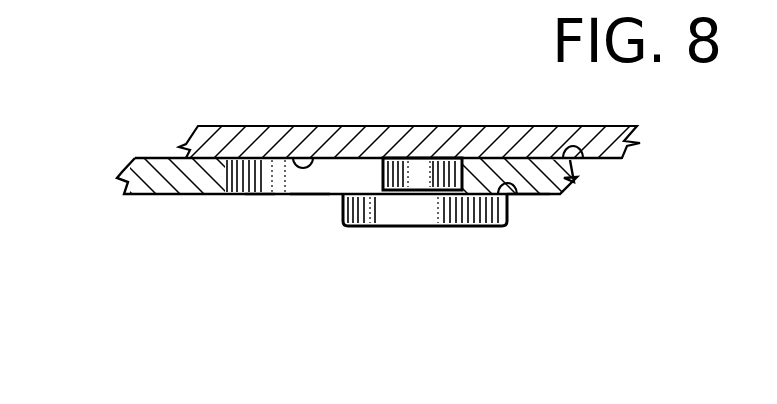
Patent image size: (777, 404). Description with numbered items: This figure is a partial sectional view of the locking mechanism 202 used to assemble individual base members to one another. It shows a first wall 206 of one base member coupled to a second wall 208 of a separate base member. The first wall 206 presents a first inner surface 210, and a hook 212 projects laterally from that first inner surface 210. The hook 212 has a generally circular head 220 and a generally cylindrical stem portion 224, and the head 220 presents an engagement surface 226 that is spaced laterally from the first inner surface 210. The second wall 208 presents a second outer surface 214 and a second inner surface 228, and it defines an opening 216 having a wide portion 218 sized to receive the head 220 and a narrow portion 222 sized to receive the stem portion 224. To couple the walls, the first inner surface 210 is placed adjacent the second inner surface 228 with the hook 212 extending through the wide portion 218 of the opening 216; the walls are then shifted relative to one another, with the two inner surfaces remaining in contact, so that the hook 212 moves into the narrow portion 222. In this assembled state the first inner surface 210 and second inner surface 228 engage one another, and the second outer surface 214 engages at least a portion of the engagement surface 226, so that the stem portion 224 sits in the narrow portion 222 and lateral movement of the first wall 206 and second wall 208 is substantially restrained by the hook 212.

The locking mechanism 202 is at (410, 277).
The first wall 206 is at (216, 110).
The second wall 208 is at (139, 207).
The first inner surface 210 is at (294, 158).
The hook 212 is at (496, 249).
The second outer surface 214 is at (219, 195).
The opening 216 is at (299, 214).
The wide portion 218 is at (259, 195).
The head 220 is at (336, 222).
The narrow portion 222 is at (431, 170).
The stem portion 224 is at (382, 176).
The engagement surface 226 is at (516, 195).
The second inner surface 228 is at (153, 158).